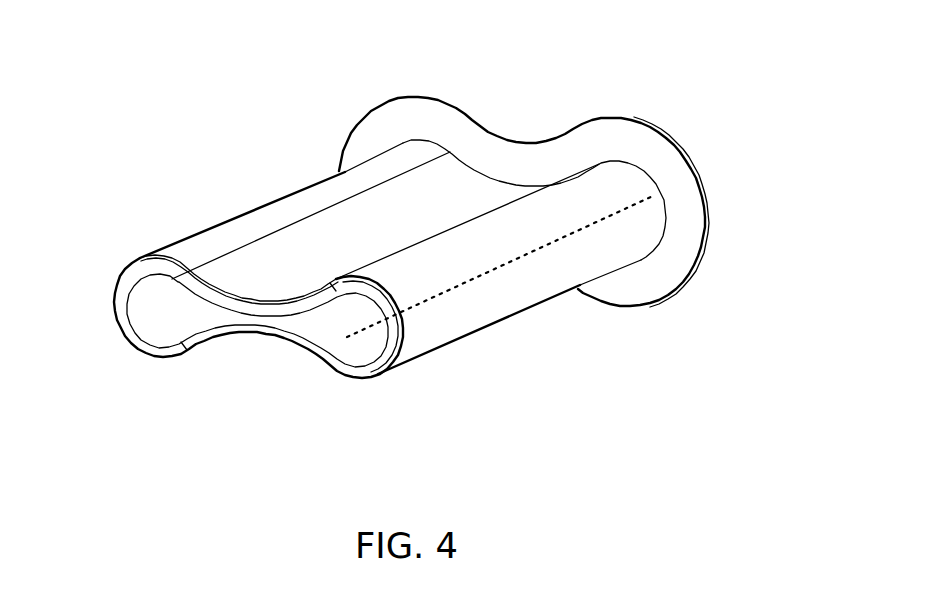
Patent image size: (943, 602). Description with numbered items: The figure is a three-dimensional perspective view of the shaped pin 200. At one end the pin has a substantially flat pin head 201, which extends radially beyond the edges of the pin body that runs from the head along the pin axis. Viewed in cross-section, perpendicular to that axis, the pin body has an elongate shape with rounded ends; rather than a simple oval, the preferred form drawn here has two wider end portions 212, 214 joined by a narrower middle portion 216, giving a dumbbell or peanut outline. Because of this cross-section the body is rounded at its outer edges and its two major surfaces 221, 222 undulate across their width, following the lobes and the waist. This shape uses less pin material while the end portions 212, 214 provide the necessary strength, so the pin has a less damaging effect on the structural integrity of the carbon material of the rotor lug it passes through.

The shaped pin 200 is at (529, 106).
The pin head 201 is at (702, 233).
The wider end portion 212 is at (157, 312).
The wider end portion 214 is at (357, 332).
The narrower middle portion 216 is at (257, 335).
The major surface 221 is at (312, 248).
The major surface 222 is at (333, 378).